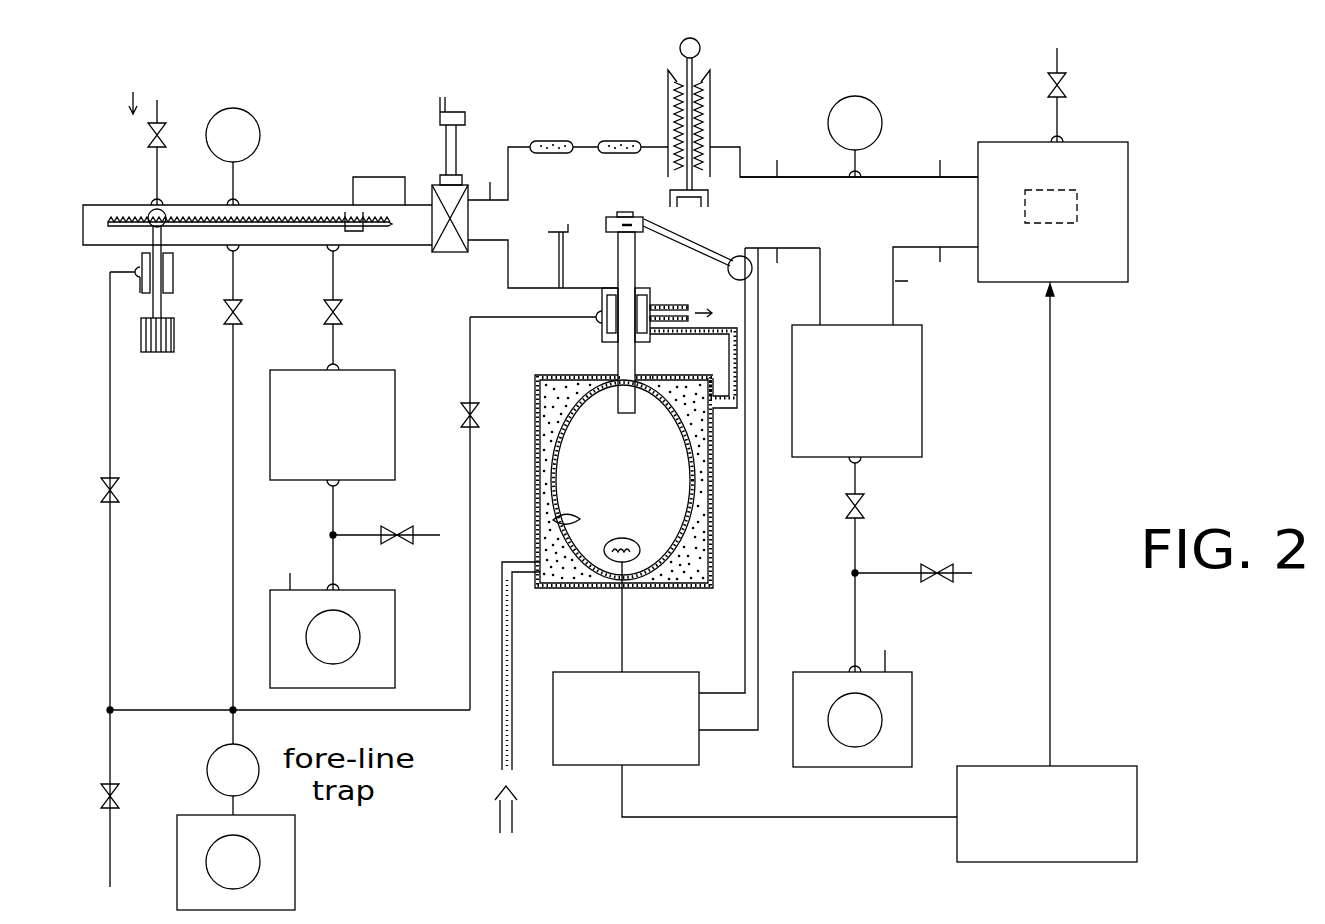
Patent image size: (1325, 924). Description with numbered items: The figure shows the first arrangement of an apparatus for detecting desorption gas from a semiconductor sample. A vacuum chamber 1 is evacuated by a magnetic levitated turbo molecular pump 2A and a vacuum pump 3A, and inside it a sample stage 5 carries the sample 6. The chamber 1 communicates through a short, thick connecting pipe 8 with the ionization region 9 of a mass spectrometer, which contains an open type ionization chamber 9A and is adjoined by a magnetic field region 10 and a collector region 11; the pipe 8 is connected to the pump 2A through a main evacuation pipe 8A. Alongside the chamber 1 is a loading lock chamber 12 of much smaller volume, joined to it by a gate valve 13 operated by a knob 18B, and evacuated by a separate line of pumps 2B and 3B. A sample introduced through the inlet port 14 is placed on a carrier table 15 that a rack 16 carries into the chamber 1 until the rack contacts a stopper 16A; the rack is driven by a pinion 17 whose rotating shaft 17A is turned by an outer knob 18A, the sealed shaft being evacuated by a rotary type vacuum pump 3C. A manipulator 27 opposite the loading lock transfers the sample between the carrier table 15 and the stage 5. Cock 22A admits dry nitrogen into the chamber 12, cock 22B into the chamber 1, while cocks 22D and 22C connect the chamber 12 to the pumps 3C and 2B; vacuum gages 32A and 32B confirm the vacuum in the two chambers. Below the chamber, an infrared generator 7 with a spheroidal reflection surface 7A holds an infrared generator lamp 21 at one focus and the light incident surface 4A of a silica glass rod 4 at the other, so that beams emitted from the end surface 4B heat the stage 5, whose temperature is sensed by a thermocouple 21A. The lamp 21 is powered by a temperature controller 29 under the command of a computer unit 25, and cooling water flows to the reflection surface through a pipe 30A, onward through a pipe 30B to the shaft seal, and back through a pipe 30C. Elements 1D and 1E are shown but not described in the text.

The vacuum chamber 1 is at (510, 160).
The gate valve 1D is at (550, 141).
The gate valve 1E is at (618, 141).
The magnetic levitated turbo molecular pump 2A is at (922, 394).
The turbo molecular pump 2B is at (366, 370).
The vacuum pump 3A is at (912, 688).
The vacuum pump 3B is at (396, 610).
The rotary type vacuum pump 3C is at (296, 840).
The glass rod 4 is at (636, 277).
The light incident surface 4A is at (634, 413).
The end surface 4B is at (628, 250).
The sample stage 5 is at (631, 322).
The sample 6 is at (616, 212).
The infrared generator 7 is at (535, 472).
The reflection surface 7A is at (540, 527).
The connecting pipe 8 is at (897, 177).
The main evacuation pipe 8A is at (895, 303).
The ionization region 9 is at (1076, 246).
The magnetic field region 10 is at (1076, 246).
The collector region 11 is at (1092, 283).
The ionization chamber 9A is at (1043, 224).
The loading lock chamber 12 is at (83, 205).
The gate valve 13 is at (432, 250).
The inlet port 14 is at (370, 177).
The carrier table 15 is at (378, 212).
The rack 16 is at (182, 217).
The stopper 16A is at (556, 266).
The pinion 17 is at (150, 212).
The rotating shaft 17A is at (142, 310).
The outer knob 18A is at (141, 345).
The knob 18B is at (440, 110).
The infrared generator lamp 21 is at (626, 576).
The thermocouple 21A is at (645, 220).
The cock 22A is at (150, 137).
The cock 22B is at (1048, 85).
The cock 22C is at (342, 310).
The cock 22D is at (242, 310).
The computer unit 25 is at (1097, 766).
The manipulator 27 is at (702, 62).
The temperature controller 29 is at (652, 672).
The pipe 30A is at (512, 644).
The pipe 30B is at (730, 364).
The pipe 30C is at (672, 315).
The vacuum gage 32A is at (256, 116).
The vacuum gage 32B is at (834, 110).